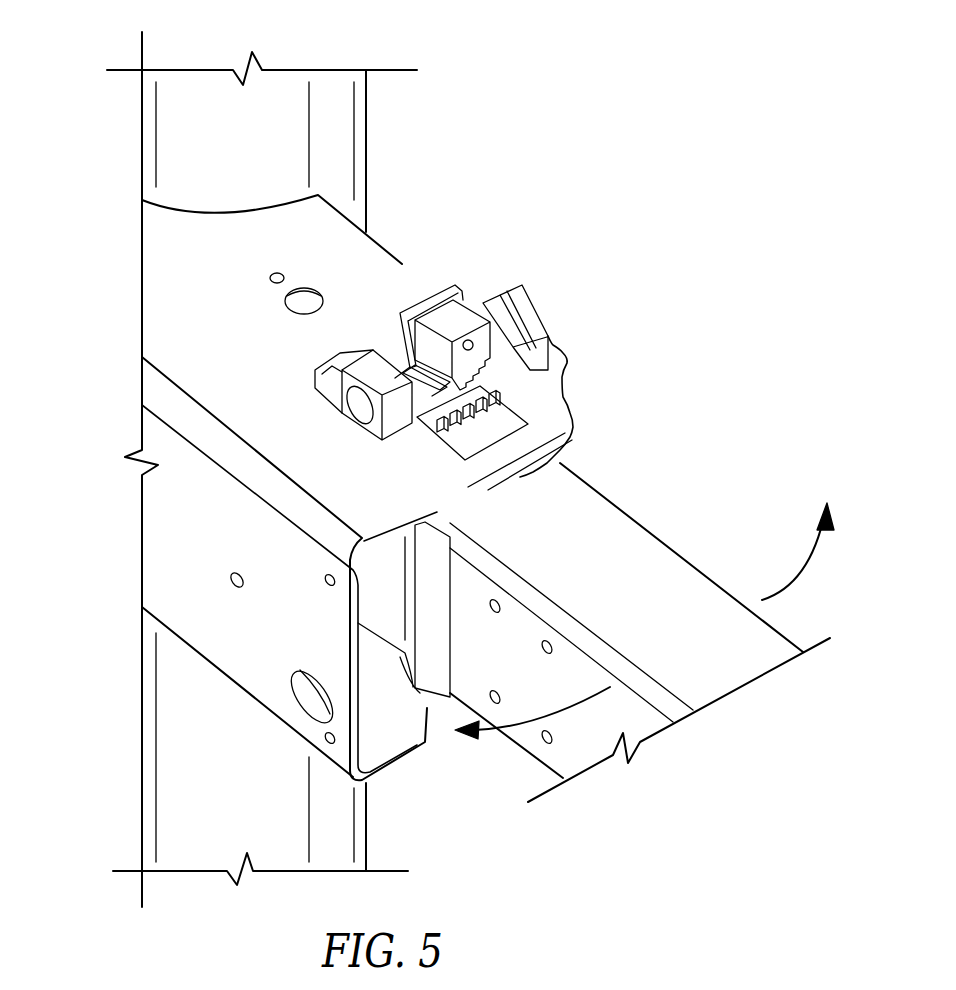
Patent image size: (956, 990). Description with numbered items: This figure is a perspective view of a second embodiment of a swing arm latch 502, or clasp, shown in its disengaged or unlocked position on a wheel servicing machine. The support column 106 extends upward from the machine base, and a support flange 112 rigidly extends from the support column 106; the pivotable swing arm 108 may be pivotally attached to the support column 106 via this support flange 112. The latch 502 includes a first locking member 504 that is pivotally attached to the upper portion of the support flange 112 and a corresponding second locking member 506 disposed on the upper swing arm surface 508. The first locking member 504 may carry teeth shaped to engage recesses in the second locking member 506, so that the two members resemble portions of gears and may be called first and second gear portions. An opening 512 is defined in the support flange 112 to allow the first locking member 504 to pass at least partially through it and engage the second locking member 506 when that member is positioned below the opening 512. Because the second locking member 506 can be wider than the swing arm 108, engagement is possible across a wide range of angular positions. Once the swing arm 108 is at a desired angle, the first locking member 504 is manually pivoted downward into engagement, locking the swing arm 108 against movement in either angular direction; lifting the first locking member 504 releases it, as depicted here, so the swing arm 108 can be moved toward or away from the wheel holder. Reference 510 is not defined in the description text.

The support column 106 is at (366, 133).
The support flange 112 is at (165, 290).
The top surface of cross bracket 510 is at (226, 352).
The swing arm latch 502 is at (493, 332).
The first locking member 504 is at (458, 305).
The second locking member 506 is at (456, 441).
The opening 512 is at (482, 448).
The upper swing arm surface 508 is at (613, 527).
The swing arm 108 is at (624, 617).